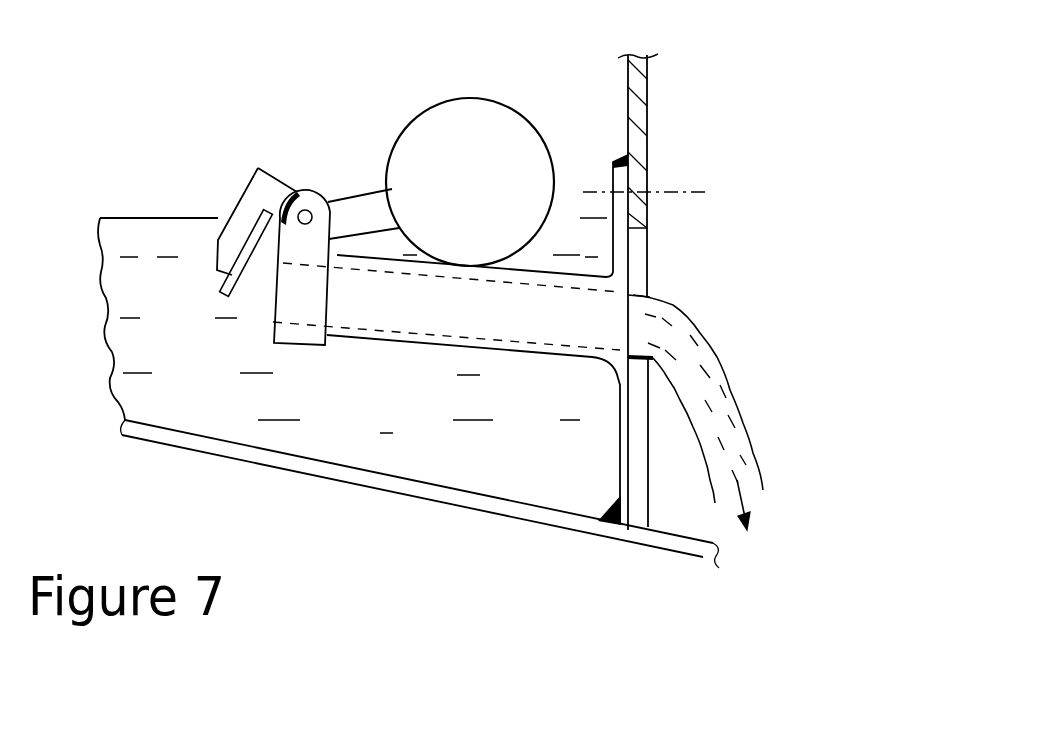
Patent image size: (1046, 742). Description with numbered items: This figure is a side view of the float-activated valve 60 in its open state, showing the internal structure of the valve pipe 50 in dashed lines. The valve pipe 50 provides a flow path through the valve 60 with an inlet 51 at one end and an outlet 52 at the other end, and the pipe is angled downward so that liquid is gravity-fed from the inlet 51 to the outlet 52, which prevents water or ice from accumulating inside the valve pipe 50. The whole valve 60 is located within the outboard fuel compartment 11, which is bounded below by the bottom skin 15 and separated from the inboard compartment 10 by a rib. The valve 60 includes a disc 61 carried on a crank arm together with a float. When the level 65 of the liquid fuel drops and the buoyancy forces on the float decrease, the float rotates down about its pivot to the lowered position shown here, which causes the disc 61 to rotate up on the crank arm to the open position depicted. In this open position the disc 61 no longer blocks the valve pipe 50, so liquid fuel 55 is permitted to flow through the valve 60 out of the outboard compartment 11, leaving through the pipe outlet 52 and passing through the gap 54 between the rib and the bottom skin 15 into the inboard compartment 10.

The inboard compartment 10 is at (693, 158).
The outboard fuel compartment 11 is at (227, 130).
The bottom skin 15 is at (418, 481).
The valve pipe 50 is at (407, 337).
The inlet 51 is at (315, 305).
The outlet 52 is at (622, 330).
The gap 54 is at (638, 263).
The liquid fuel 55 is at (685, 348).
The float-activated valve 60 is at (362, 132).
The disc 61 is at (237, 283).
The level 65 is at (152, 213).